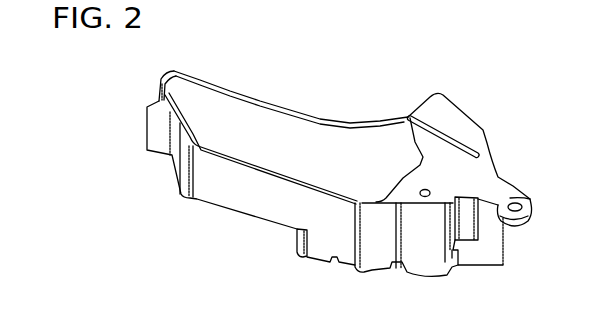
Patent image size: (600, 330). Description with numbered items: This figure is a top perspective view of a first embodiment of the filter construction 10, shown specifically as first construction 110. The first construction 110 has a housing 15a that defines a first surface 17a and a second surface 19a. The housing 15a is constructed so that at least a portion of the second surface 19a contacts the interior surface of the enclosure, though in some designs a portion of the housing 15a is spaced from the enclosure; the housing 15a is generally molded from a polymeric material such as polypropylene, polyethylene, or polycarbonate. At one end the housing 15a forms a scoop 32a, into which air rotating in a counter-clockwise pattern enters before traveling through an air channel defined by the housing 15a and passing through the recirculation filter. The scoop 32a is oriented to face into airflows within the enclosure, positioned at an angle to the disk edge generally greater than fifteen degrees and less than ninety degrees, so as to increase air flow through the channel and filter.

The filter construction 10 is at (391, 72).
The first construction 110 is at (452, 78).
The first surface 17a is at (279, 104).
The housing 15a is at (208, 200).
The second surface 19a is at (301, 259).
The scoop 32a is at (456, 105).